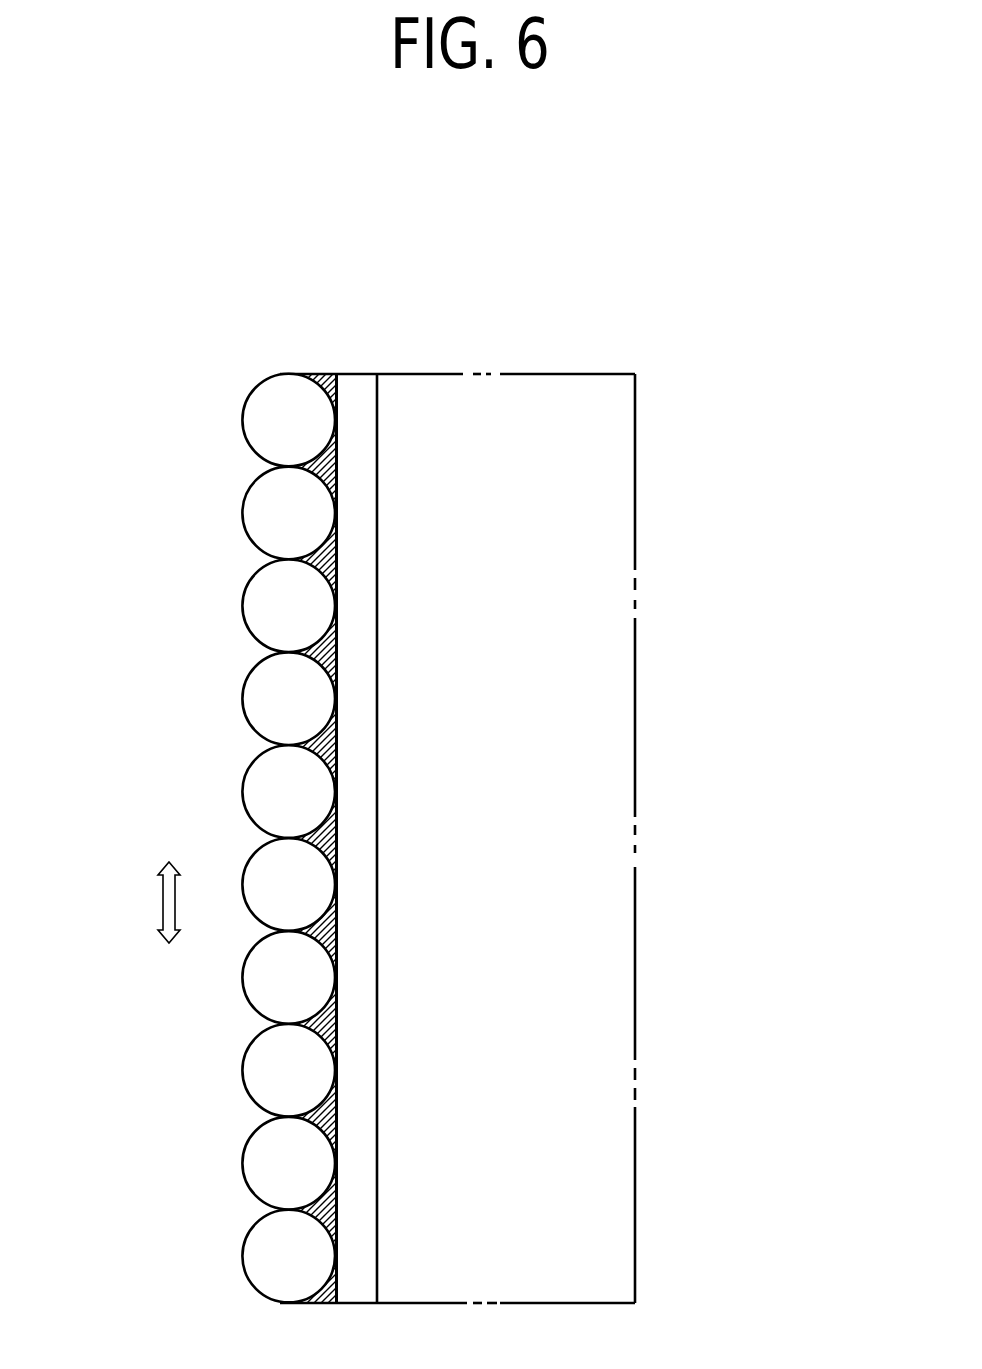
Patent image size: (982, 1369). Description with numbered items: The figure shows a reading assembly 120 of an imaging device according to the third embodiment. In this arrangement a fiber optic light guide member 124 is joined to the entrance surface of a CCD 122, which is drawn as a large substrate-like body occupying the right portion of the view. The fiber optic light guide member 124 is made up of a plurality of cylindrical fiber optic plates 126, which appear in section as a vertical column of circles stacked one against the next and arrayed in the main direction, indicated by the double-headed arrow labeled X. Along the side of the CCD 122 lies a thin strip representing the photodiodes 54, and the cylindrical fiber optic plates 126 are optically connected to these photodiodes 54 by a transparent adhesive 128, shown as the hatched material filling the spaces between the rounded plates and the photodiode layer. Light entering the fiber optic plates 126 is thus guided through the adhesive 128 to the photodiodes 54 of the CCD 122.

The reading assembly 120 is at (663, 188).
The CCD 122 is at (586, 478).
The fiber optic light guide member 124 is at (207, 752).
The cylindrical fiber optic plate 126 is at (267, 427).
The transparent adhesive 128 is at (333, 565).
The photodiodes 54 is at (372, 840).